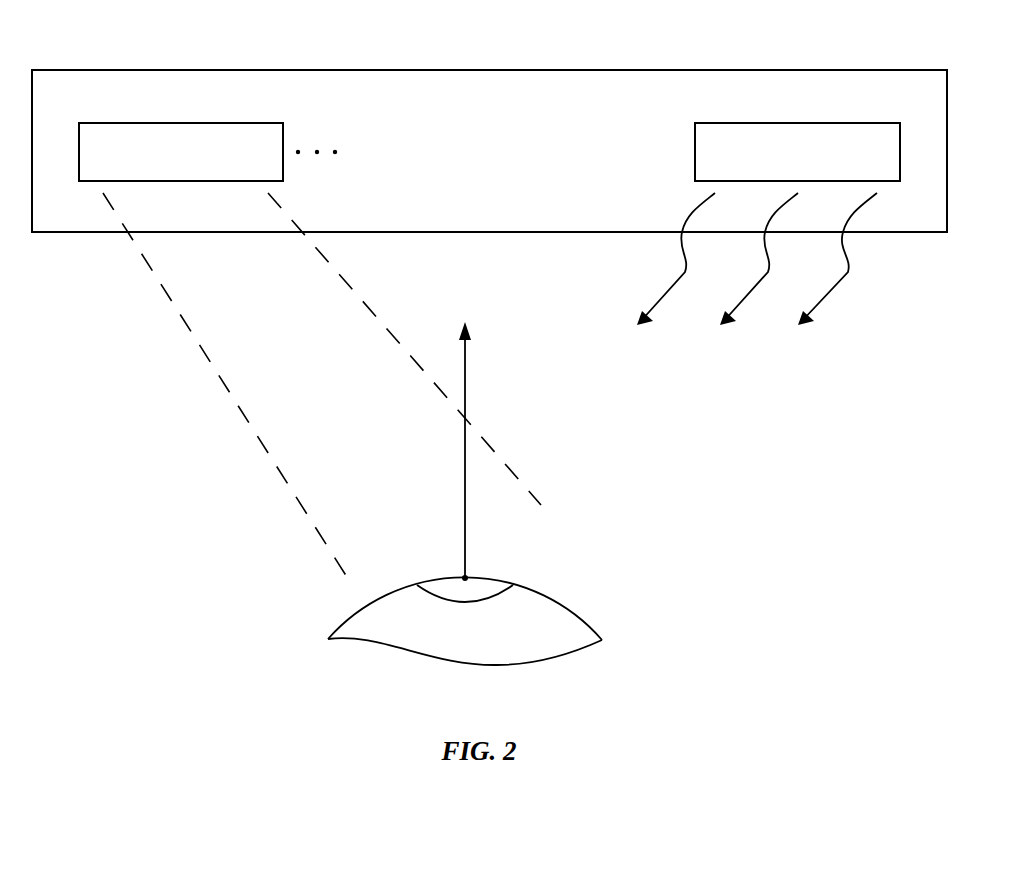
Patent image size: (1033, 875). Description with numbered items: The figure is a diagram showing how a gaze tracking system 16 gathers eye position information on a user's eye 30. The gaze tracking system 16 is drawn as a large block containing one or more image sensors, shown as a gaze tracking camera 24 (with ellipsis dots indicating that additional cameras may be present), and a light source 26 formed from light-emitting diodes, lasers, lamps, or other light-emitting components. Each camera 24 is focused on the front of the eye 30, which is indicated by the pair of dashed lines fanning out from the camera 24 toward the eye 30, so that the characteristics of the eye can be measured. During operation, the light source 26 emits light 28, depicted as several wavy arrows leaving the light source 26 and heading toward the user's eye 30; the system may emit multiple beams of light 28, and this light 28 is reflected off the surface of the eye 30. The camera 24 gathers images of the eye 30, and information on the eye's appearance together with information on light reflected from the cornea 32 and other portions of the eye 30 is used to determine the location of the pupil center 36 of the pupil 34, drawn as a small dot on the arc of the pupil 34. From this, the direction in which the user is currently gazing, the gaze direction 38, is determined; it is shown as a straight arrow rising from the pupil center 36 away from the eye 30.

The gaze tracking system 16 is at (851, 70).
The gaze tracking camera 24 is at (200, 123).
The light source 26 is at (795, 123).
The light 28 is at (768, 258).
The eye 30 is at (490, 591).
The cornea 32 is at (555, 617).
The pupil 34 is at (494, 590).
The pupil center 36 is at (468, 576).
The gaze direction 38 is at (467, 370).